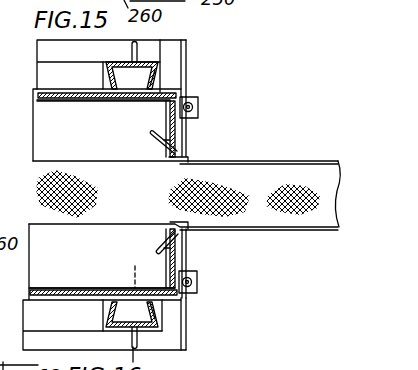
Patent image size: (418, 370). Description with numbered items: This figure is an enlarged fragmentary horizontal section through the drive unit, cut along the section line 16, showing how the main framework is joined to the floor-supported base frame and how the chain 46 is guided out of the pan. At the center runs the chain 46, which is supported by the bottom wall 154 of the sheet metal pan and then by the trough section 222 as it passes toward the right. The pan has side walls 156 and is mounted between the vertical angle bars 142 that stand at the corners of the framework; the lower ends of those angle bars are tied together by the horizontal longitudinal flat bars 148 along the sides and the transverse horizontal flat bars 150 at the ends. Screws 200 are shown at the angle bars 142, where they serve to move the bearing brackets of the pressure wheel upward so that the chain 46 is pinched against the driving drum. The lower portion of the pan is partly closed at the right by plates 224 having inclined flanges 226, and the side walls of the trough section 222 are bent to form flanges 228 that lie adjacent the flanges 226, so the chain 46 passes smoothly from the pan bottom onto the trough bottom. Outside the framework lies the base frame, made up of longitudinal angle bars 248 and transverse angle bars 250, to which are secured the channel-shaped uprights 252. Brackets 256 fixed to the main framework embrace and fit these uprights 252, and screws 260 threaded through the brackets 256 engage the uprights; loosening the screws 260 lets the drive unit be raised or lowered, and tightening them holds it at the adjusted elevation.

The section line 16- 16 is at (127, 272).
The chain 46 is at (196, 172).
The vertical angle bar 142 is at (187, 93).
The horizontal longitudinal flat bar 148 is at (49, 73).
The transverse horizontal flat bar 150 is at (187, 245).
The bottom wall 154 is at (96, 252).
The side wall 156 is at (56, 97).
The screw 200 is at (198, 104).
The trough section 222 is at (260, 163).
The plate 224 is at (176, 130).
The inclined flange 226 is at (158, 136).
The flange 228 is at (156, 145).
The longitudinal angle bar 248 is at (42, 46).
The transverse angle bar 250 is at (185, 55).
The upright 252 is at (158, 73).
The bracket 256 is at (142, 62).
The screw 260 is at (131, 49).